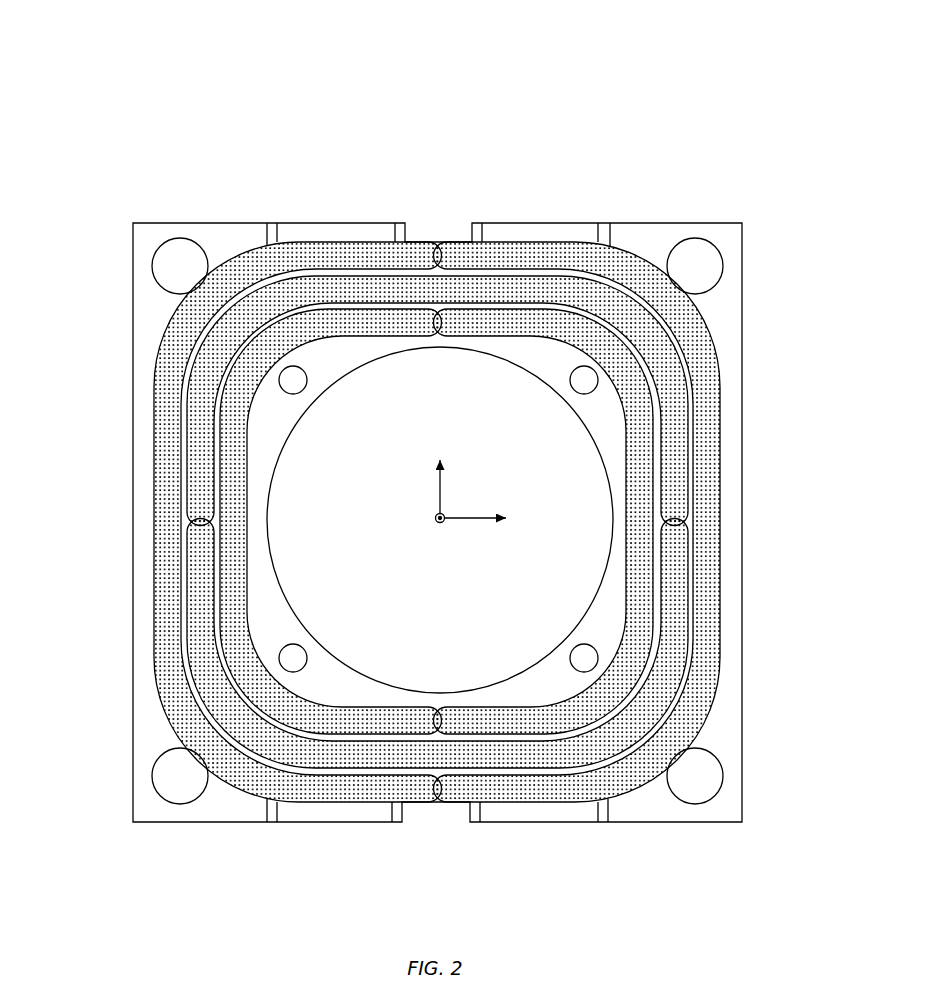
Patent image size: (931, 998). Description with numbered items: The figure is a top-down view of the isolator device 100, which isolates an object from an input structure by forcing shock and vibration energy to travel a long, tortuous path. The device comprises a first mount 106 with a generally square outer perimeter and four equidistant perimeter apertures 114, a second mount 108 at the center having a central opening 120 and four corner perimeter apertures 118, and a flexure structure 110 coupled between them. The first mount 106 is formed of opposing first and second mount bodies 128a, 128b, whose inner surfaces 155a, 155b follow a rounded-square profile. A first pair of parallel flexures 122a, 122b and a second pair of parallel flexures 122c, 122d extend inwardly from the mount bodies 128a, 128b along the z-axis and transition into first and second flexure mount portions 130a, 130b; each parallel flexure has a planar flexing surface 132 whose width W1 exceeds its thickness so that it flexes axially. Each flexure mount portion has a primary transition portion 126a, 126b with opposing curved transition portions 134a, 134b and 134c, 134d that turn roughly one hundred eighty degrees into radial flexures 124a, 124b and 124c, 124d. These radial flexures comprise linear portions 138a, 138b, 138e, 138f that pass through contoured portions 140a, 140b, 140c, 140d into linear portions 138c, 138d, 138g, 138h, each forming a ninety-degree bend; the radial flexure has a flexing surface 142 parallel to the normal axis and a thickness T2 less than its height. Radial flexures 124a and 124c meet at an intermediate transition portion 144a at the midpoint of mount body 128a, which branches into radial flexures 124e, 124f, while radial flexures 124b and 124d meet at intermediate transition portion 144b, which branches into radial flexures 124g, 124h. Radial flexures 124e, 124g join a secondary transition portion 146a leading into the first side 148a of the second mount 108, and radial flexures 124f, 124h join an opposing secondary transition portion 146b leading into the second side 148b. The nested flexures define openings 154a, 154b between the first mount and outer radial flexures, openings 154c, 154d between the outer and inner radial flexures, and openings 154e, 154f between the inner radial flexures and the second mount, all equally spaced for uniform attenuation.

The isolator device 100 is at (252, 50).
The first mount 106 is at (137, 480).
The second mount 108 is at (597, 612).
The flexure structure 110 is at (346, 165).
The perimeter apertures 114 is at (153, 262).
The perimeter apertures 118 is at (305, 388).
The central opening 120 is at (526, 547).
The parallel flexure 122a is at (356, 820).
The parallel flexure 122b is at (520, 822).
The parallel flexure 122c is at (376, 232).
The parallel flexure 122d is at (590, 232).
The radial flexure 124a is at (188, 690).
The radial flexure 124b is at (690, 686).
The radial flexure 124c is at (298, 252).
The radial flexure 124d is at (577, 266).
The radial flexure 124e is at (380, 316).
The radial flexure 124f is at (230, 580).
The radial flexure 124g is at (515, 317).
The radial flexure 124h is at (643, 590).
The primary transition portion 126a is at (433, 797).
The primary transition portion 126b is at (432, 228).
The first mount body 128a is at (147, 342).
The second mount body 128b is at (737, 630).
The first flexure mount portion 130a is at (441, 815).
The second flexure mount portion 130b is at (470, 235).
The flexing surface 132 is at (338, 815).
The curved transition portion 134a is at (405, 805).
The curved transition portion 134b is at (472, 805).
The curved transition portion 134c is at (430, 228).
The curved transition portion 134d is at (487, 254).
The linear portion 138a is at (358, 725).
The linear portion 138b is at (525, 725).
The linear portion 138c is at (172, 656).
The linear portion 138d is at (703, 590).
The linear portion 138e is at (333, 282).
The linear portion 138f is at (560, 290).
The linear portion 138g is at (185, 400).
The linear portion 138h is at (706, 374).
The contoured portion 140a is at (247, 800).
The contoured portion 140b is at (565, 820).
The contoured portion 140c is at (243, 262).
The contoured portion 140d is at (704, 250).
The flexing surface 142 is at (312, 810).
The intermediate transition portion 144a is at (184, 526).
The intermediate transition portion 144b is at (682, 520).
The secondary transition portion 146a is at (440, 336).
The secondary transition portion 146b is at (440, 718).
The first side 148a is at (433, 330).
The second side 148b is at (435, 710).
The opening 154a is at (166, 450).
The opening 154b is at (706, 452).
The opening 154c is at (615, 748).
The opening 154d is at (305, 276).
The opening 154e is at (238, 520).
The opening 154f is at (638, 520).
The inner surface 155a is at (173, 360).
The inner surface 155b is at (725, 335).
The thickness T2 is at (203, 688).
The width W1 is at (290, 825).